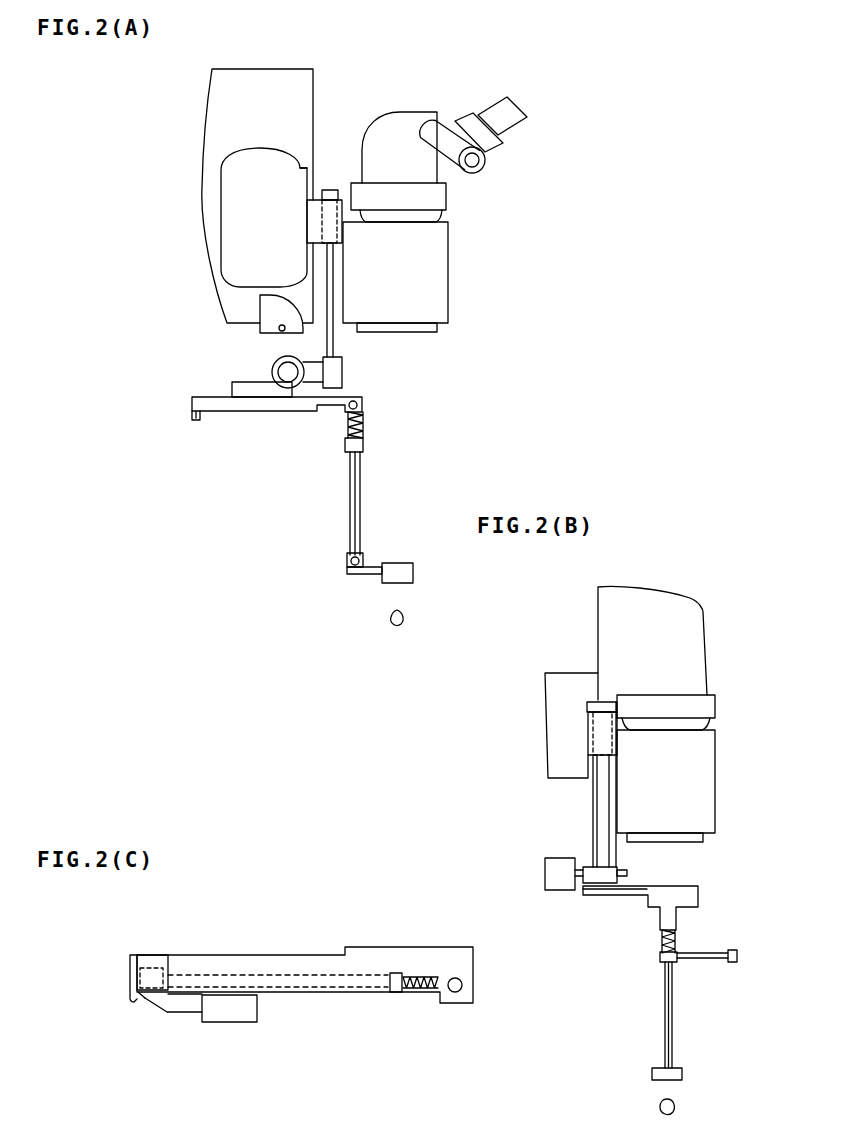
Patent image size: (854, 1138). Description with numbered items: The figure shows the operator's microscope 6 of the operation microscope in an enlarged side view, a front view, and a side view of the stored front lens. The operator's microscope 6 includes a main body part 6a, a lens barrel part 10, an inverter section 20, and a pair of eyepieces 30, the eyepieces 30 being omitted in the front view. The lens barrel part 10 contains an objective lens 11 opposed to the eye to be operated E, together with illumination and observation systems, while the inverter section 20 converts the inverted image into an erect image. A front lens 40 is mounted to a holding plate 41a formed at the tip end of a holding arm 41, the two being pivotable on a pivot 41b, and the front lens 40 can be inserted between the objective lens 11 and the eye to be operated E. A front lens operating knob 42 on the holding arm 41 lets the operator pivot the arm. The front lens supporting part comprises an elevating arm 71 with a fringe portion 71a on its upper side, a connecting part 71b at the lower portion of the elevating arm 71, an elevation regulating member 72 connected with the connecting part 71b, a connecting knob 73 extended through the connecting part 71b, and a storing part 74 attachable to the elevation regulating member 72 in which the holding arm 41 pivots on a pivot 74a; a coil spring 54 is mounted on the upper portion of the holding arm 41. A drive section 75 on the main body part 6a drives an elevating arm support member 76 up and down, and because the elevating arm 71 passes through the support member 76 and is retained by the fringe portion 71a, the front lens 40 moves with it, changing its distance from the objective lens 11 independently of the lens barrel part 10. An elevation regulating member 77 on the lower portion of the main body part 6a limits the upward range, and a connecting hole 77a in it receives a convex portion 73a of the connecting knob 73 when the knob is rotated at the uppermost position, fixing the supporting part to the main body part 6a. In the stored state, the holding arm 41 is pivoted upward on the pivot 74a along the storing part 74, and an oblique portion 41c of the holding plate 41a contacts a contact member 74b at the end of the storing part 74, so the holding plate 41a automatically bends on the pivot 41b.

In FIG. 2A, the operator's microscope 6 is at (311, 172).
In FIG. 2B, the operator's microscope 6 is at (706, 618).
In FIG. 2A, the main body part 6a is at (237, 78).
In FIG. 2B, the main body part 6a is at (620, 602).
In FIG. 2A, the lens barrel part 10 is at (450, 224).
In FIG. 2B, the lens barrel part 10 is at (707, 750).
In FIG. 2A, the objective lens 11 is at (440, 331).
In FIG. 2B, the objective lens 11 is at (716, 842).
In FIG. 2A, the inverter section 20 is at (452, 197).
In FIG. 2B, the inverter section 20 is at (707, 707).
In FIG. 2A, the eyepieces 30 is at (522, 128).
In FIG. 2A, the front lens 40 is at (408, 564).
In FIG. 2B, the front lens 40 is at (652, 1075).
In FIG. 2C, the front lens 40 is at (243, 1024).
In FIG. 2A, the holding arm 41 is at (350, 493).
In FIG. 2B, the holding arm 41 is at (674, 1002).
In FIG. 2C, the holding arm 41 is at (312, 974).
In FIG. 2A, the holding plate 41a is at (373, 576).
In FIG. 2C, the holding plate 41a is at (187, 1015).
In FIG. 2A, the pivot 41b is at (358, 558).
In FIG. 2C, the pivot 41b is at (157, 973).
In FIG. 2A, the oblique portion 41c is at (350, 571).
In FIG. 2C, the oblique portion 41c is at (145, 1003).
In FIG. 2B, the front lens operating knob 42 is at (738, 957).
In FIG. 2A, the coil spring 54 is at (364, 426).
In FIG. 2B, the coil spring 54 is at (661, 940).
In FIG. 2C, the coil spring 54 is at (417, 993).
In FIG. 2A, the elevating arm 71 is at (337, 306).
In FIG. 2B, the elevating arm 71 is at (600, 830).
In FIG. 2A, the fringe portion 71a is at (334, 190).
In FIG. 2B, the fringe portion 71a is at (588, 698).
In FIG. 2A, the connecting part 71b is at (343, 381).
In FIG. 2B, the connecting part 71b is at (623, 868).
In FIG. 2A, the elevation regulating member 72 is at (231, 390).
In FIG. 2A, the connecting knob 73 is at (313, 362).
In FIG. 2B, the connecting knob 73 is at (545, 880).
In FIG. 2B, the convex portion 73a is at (628, 875).
In FIG. 2A, the storing part 74 is at (218, 413).
In FIG. 2B, the storing part 74 is at (699, 896).
In FIG. 2C, the storing part 74 is at (418, 946).
In FIG. 2A, the pivot 74a is at (343, 411).
In FIG. 2C, the pivot 74a is at (463, 985).
In FIG. 2A, the contact member 74b is at (190, 418).
In FIG. 2C, the contact member 74b is at (130, 957).
In FIG. 2A, the drive section 75 is at (237, 239).
In FIG. 2B, the drive section 75 is at (557, 722).
In FIG. 2A, the elevating arm support member 76 is at (312, 216).
In FIG. 2A, the elevation regulating member 77 is at (257, 327).
In FIG. 2A, the connecting hole 77a is at (280, 331).
In FIG. 2A, the eye to be operated E is at (389, 617).
In FIG. 2B, the eye to be operated E is at (677, 1105).